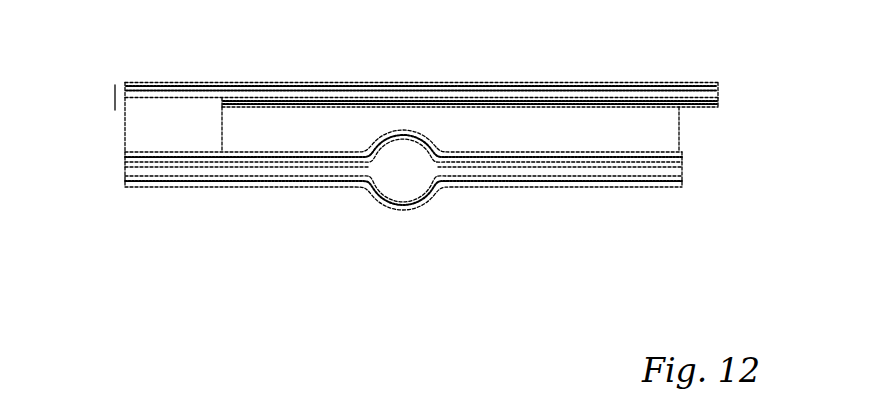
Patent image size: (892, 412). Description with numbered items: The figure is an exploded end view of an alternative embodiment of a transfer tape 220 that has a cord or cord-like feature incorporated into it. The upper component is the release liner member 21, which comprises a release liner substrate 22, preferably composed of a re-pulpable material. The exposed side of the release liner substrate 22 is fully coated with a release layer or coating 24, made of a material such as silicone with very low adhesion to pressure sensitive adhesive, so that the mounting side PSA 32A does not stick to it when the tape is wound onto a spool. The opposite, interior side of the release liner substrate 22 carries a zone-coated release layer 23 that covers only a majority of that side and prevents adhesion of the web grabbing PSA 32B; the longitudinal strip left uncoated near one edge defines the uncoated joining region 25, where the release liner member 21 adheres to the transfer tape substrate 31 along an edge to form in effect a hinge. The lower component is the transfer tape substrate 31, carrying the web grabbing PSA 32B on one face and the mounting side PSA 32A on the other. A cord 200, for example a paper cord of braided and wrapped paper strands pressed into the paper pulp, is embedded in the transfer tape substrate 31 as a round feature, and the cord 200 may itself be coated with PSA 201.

The release liner member 21 is at (113, 100).
The release liner substrate 22 is at (720, 96).
The zone-coated release layer 23 is at (707, 108).
The release layer or coating 24 is at (648, 82).
The uncoated joining region 25 is at (126, 139).
The transfer tape substrate 31 is at (687, 174).
The mounting side PSA 32A is at (665, 193).
The web grabbing PSA 32B is at (686, 161).
The cord 200 is at (403, 246).
The PSA 201 is at (411, 147).
The transfer tape 220 is at (468, 243).